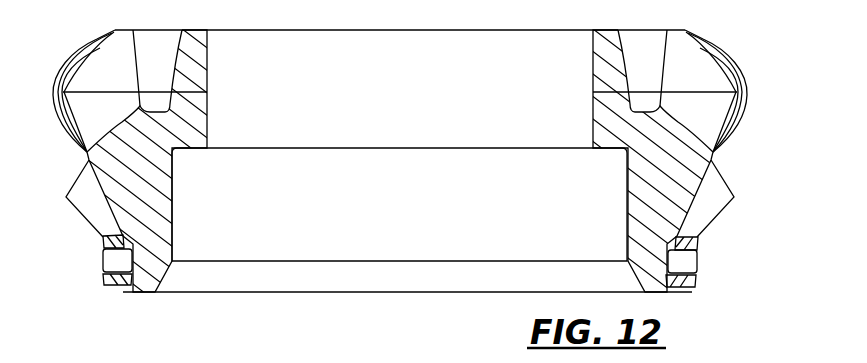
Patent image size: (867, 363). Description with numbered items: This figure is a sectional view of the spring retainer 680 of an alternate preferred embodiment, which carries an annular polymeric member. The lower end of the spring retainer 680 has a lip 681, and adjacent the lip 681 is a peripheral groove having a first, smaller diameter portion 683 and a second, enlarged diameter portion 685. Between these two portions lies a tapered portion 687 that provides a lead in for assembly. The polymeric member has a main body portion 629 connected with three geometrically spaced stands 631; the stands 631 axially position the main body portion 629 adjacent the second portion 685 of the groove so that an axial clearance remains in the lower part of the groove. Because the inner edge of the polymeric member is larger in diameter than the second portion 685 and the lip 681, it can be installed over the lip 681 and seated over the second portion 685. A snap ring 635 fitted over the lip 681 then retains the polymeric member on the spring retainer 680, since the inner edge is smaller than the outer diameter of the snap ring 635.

The main body portion 629 is at (102, 240).
The stands 631 is at (102, 257).
The snap ring 635 is at (107, 282).
The spring retainer 680 is at (683, 36).
The second enlarged diameter portion 685 is at (700, 232).
The tapered portion 687 is at (696, 262).
The smaller diameter portion 683 is at (693, 266).
The lip 681 is at (676, 291).